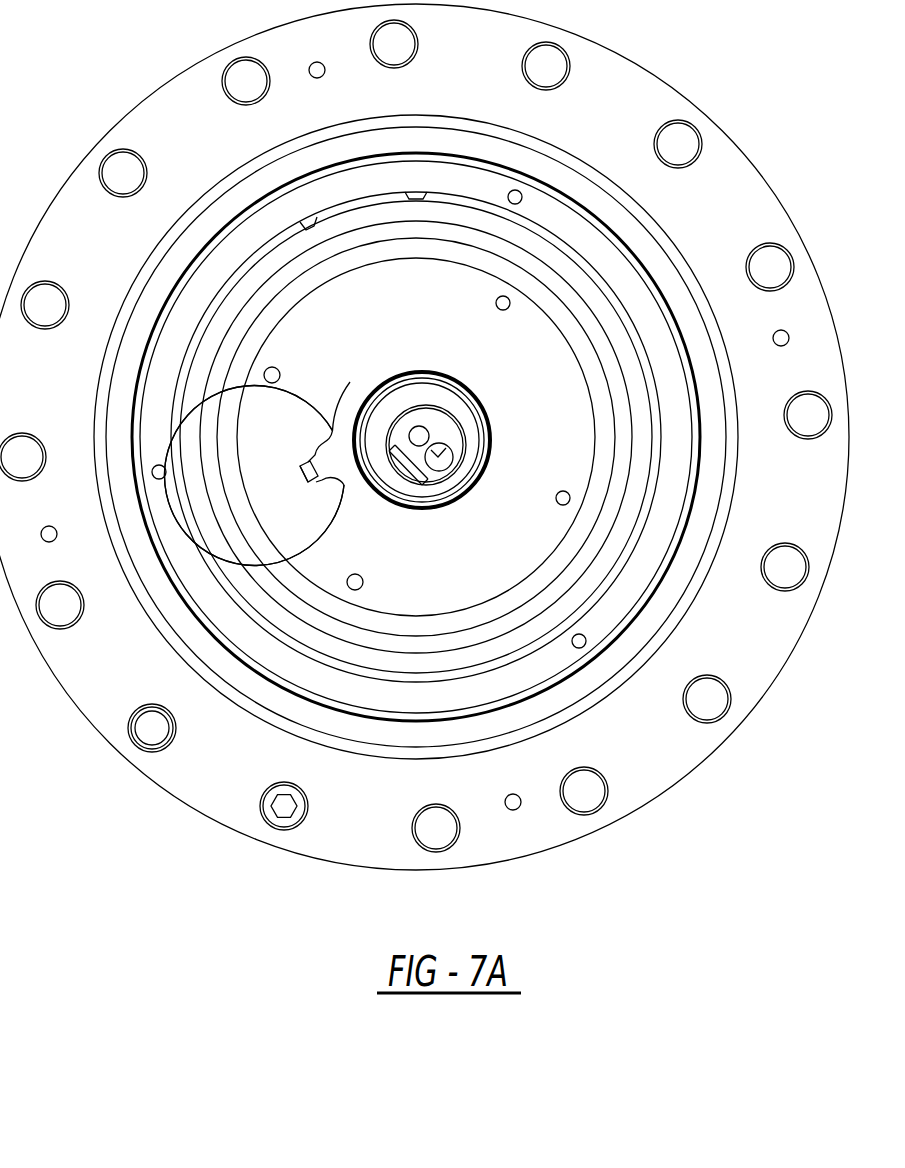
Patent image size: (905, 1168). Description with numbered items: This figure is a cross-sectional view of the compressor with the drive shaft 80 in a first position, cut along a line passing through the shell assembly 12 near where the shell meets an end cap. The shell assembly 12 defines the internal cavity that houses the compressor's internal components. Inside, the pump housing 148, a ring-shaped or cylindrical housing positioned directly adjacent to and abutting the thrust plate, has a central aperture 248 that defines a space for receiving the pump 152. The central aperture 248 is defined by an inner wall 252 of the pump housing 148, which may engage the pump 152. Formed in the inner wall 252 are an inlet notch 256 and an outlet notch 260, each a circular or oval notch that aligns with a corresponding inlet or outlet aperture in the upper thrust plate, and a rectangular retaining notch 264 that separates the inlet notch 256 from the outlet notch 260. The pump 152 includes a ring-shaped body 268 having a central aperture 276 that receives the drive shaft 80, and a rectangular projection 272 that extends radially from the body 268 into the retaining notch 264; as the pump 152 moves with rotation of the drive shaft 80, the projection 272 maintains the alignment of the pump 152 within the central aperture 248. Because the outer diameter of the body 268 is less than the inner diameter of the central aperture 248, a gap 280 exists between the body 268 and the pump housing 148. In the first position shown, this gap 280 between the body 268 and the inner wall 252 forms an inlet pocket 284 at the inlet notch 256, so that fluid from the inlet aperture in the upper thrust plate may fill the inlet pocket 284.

The shell assembly 12 is at (737, 178).
The drive shaft 80 is at (447, 424).
The pump housing 148 is at (534, 556).
The pump 152 is at (497, 462).
The central aperture 248 is at (410, 344).
The inner wall 252 is at (383, 357).
The inlet notch 256 is at (322, 440).
The outlet notch 260 is at (340, 492).
The retaining notch 264 is at (299, 476).
The body 268 is at (438, 514).
The projection 272 is at (300, 466).
The central aperture 276 is at (455, 380).
The gap 280 is at (347, 383).
The inlet pocket 284 is at (332, 402).